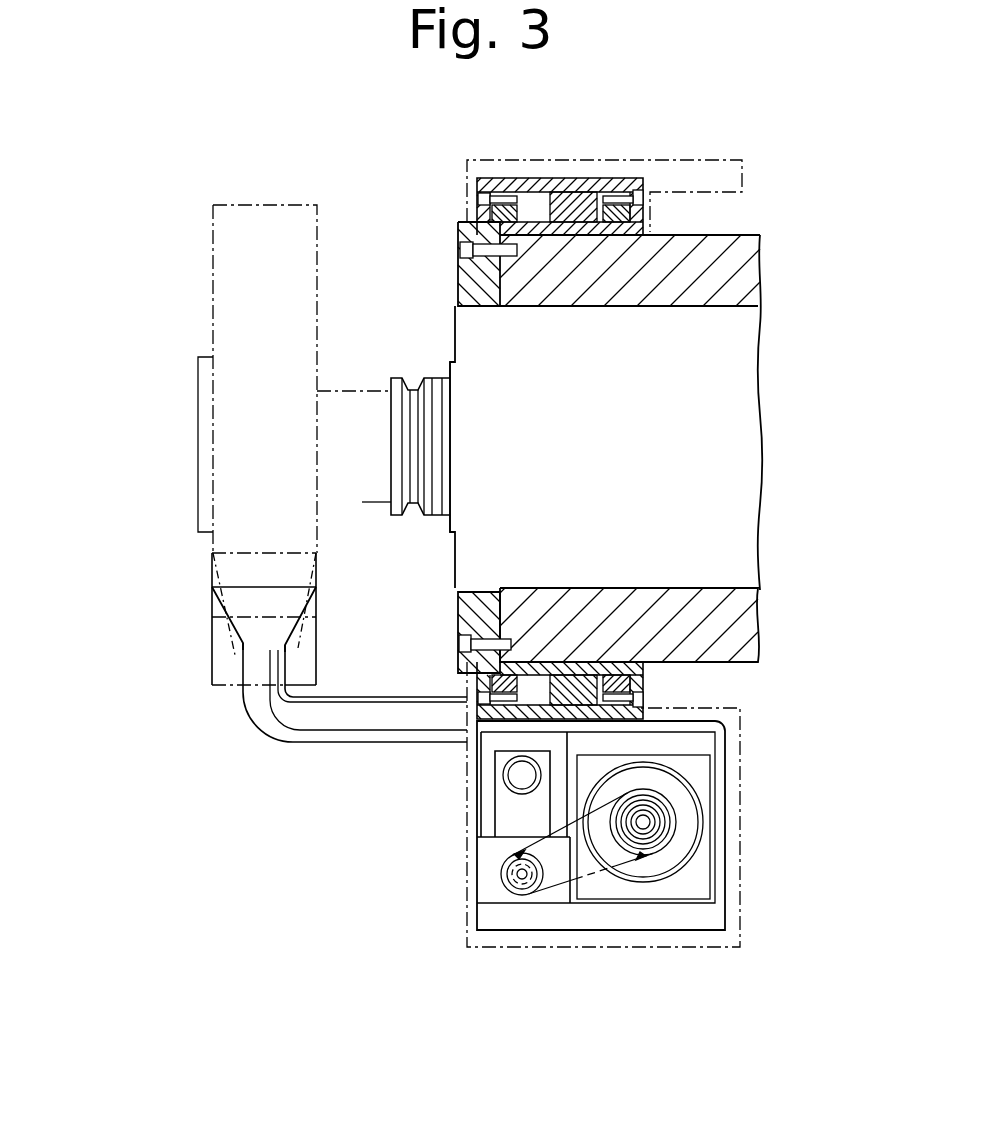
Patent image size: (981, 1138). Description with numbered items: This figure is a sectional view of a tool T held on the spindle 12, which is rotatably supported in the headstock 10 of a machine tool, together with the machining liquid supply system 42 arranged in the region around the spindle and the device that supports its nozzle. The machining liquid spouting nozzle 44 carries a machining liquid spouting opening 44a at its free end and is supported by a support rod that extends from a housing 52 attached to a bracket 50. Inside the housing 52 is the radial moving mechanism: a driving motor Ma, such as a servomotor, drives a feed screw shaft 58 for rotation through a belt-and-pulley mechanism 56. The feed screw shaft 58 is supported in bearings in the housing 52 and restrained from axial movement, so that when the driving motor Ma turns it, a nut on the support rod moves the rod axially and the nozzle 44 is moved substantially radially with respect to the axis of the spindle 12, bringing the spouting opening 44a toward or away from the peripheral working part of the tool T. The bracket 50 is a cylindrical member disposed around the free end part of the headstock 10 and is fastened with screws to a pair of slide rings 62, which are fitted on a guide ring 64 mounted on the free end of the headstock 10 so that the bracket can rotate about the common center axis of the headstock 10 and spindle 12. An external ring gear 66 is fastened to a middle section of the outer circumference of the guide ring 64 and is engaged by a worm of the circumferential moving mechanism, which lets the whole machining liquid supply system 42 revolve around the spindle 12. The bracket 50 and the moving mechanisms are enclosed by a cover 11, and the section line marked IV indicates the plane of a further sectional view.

The headstock 10 is at (748, 236).
The cover 11 is at (598, 160).
The spindle 12 is at (735, 368).
The bracket 50 is at (508, 185).
The slide rings 62 is at (603, 675).
The guide ring 64 is at (470, 605).
The external ring gear 66 is at (588, 665).
The tool T is at (213, 243).
The section line IV is at (112, 443).
The machining liquid spouting nozzle 44 is at (230, 635).
The machining liquid spouting opening 44a is at (263, 585).
The machining liquid supply system 42 is at (383, 744).
The housing 52 is at (720, 848).
The driving motor Ma is at (698, 778).
The feed screw shaft 58 is at (520, 775).
The belt-and-pulley mechanism 56 is at (556, 885).